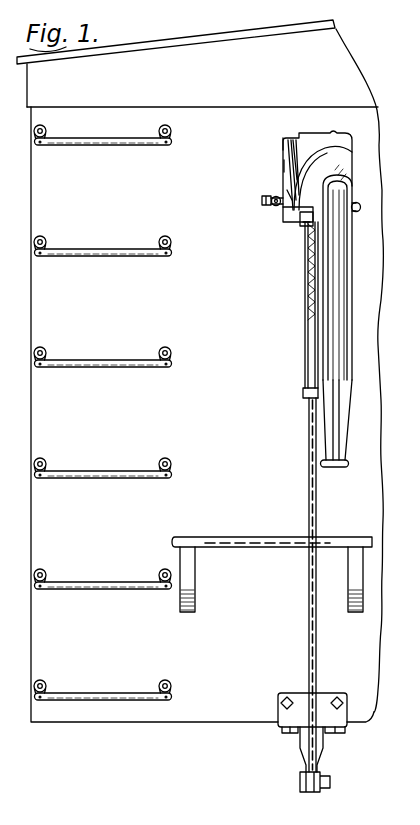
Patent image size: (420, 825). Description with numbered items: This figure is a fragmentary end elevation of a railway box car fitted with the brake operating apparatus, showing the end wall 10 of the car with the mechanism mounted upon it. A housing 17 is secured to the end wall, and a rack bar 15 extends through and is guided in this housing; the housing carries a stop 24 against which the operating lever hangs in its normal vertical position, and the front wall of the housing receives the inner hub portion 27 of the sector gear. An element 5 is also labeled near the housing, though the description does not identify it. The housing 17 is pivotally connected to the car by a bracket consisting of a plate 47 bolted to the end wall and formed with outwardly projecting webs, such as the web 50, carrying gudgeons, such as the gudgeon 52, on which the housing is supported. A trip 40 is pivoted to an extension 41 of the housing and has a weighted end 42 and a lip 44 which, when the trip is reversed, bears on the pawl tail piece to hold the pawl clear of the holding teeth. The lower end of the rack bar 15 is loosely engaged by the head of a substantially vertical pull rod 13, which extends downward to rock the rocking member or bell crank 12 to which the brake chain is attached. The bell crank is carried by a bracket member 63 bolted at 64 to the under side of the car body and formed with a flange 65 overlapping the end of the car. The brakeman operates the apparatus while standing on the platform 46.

The end wall 10 is at (386, 124).
The housing 5 is at (330, 158).
The housing 17 is at (293, 160).
The plate 47 is at (276, 146).
The web 50 is at (283, 165).
The lip 44 is at (290, 195).
The trip 40 is at (267, 197).
The weighted end 42 is at (269, 205).
The extension 41 is at (283, 213).
The gudgeon 52 is at (302, 224).
The stop 24 is at (361, 207).
The inner hub portion 27 is at (335, 313).
The rack bar 15 is at (303, 362).
The pull rod 13 is at (306, 507).
The platform 46 is at (372, 546).
The flange 65 is at (281, 700).
The bolts 64 is at (336, 699).
The bracket member 63 is at (295, 743).
The rocking member 12 is at (331, 782).